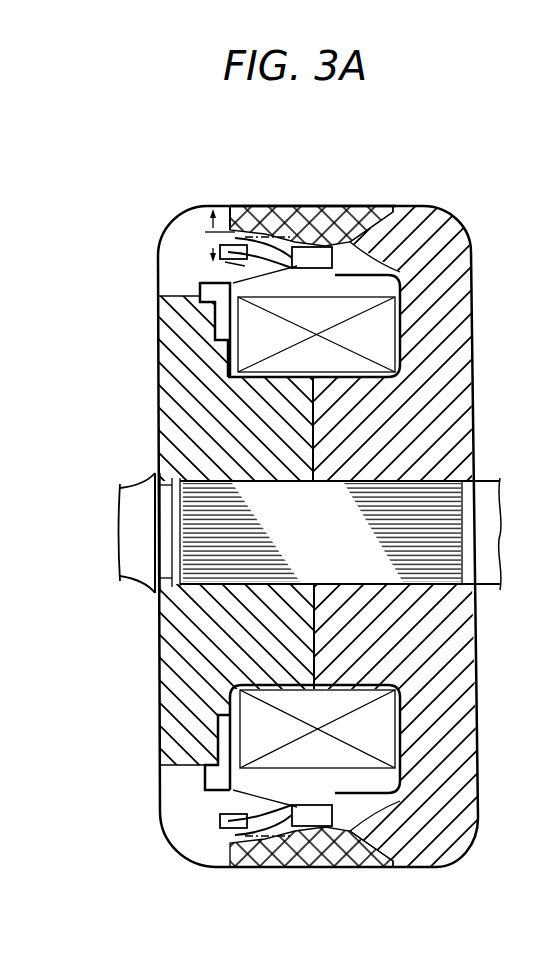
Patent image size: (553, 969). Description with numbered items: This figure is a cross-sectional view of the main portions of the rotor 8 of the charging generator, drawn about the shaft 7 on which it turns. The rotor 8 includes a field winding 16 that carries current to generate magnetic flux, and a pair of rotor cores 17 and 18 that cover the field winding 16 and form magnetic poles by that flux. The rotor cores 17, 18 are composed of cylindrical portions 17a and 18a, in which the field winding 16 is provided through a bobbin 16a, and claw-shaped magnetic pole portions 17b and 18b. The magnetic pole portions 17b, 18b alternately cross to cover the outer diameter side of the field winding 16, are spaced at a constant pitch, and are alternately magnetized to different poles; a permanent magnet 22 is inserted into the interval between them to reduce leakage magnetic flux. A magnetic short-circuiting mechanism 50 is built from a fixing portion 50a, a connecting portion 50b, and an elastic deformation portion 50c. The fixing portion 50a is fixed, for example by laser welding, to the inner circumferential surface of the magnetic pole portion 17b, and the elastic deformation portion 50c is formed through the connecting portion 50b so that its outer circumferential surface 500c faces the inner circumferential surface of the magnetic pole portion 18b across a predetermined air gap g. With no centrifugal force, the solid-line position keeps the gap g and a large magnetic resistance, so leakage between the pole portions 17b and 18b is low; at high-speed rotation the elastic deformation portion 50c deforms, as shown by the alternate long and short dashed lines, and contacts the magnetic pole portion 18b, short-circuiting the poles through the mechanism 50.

The shaft 7 is at (487, 513).
The rotor 8 is at (446, 203).
The field winding 16 is at (380, 335).
The bobbin 16a is at (200, 289).
The rotor core 17 is at (177, 222).
The cylindrical portion 17a is at (210, 422).
The claw-shaped magnetic pole portion 17b is at (383, 206).
The rotor core 18 is at (458, 243).
The cylindrical portion 18a is at (353, 416).
The claw-shaped magnetic pole portion 18b is at (242, 203).
The permanent magnet 22 is at (296, 206).
The magnetic short-circuiting mechanism 50 is at (328, 281).
The fixing portion 50a is at (330, 207).
The connecting portion 50b is at (393, 265).
The elastic deformation portion 50c is at (232, 252).
The outer circumferential surface 500c is at (232, 265).
The air gap g is at (204, 235).